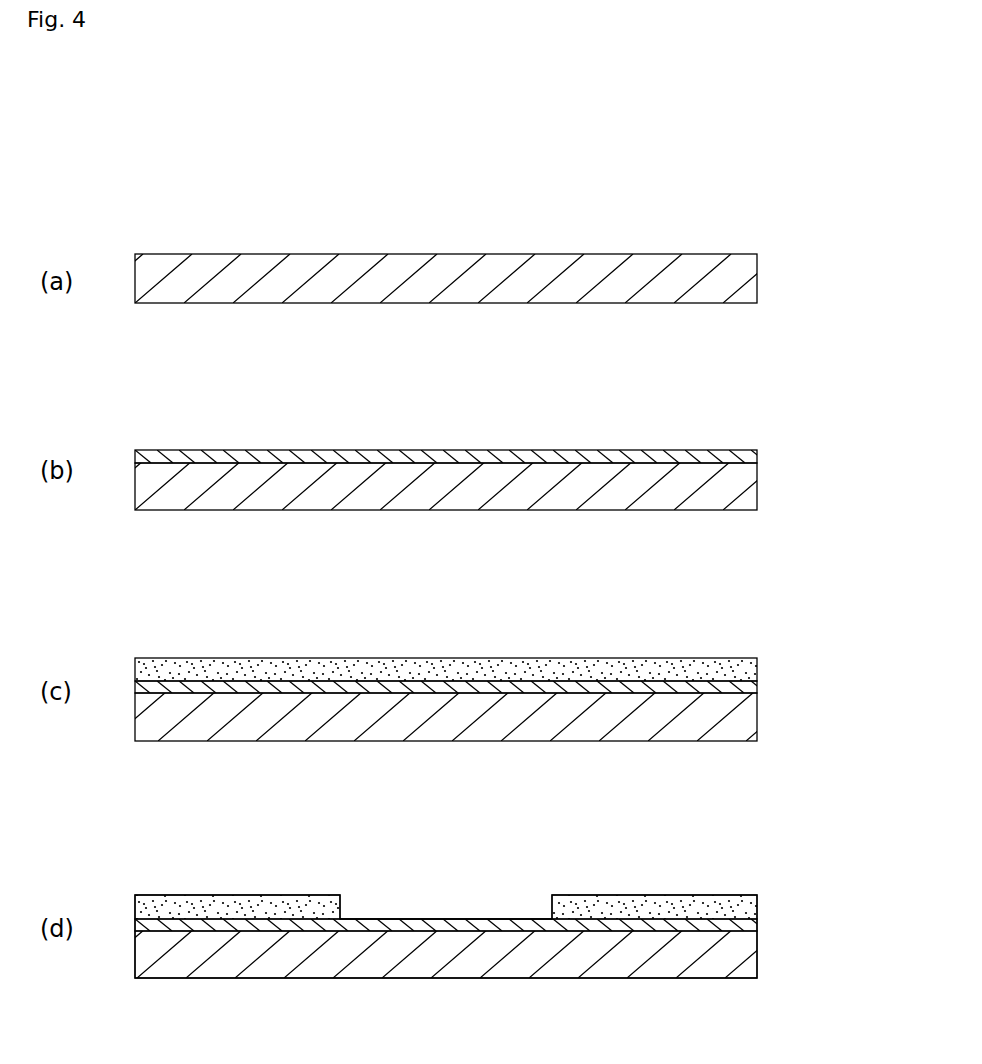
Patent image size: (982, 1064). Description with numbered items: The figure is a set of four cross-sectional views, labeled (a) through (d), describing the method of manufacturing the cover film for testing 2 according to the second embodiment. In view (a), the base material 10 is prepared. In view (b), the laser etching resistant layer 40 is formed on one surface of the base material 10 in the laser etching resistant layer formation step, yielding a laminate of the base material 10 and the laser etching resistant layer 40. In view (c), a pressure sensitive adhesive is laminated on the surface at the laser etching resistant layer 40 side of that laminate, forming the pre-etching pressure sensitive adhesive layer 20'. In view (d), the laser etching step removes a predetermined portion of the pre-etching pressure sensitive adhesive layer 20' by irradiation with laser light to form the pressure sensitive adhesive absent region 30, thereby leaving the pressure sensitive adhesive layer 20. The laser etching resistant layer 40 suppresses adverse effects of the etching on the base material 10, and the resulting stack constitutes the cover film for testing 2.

The base material 10 is at (757, 277).
The laser etching resistant layer 40 is at (752, 453).
The pre-etching pressure sensitive adhesive layer 20' is at (501, 662).
The pressure sensitive adhesive layer 20 is at (497, 901).
The pressure sensitive adhesive absent region 30 is at (462, 914).
The cover film for testing 2 is at (862, 875).